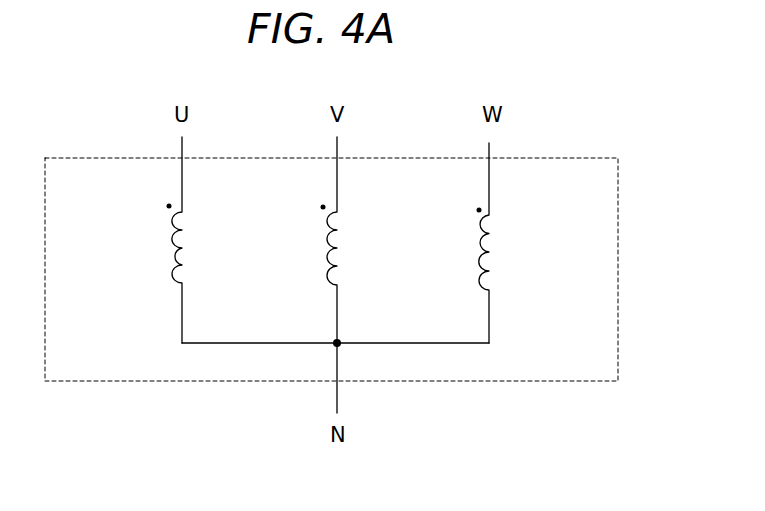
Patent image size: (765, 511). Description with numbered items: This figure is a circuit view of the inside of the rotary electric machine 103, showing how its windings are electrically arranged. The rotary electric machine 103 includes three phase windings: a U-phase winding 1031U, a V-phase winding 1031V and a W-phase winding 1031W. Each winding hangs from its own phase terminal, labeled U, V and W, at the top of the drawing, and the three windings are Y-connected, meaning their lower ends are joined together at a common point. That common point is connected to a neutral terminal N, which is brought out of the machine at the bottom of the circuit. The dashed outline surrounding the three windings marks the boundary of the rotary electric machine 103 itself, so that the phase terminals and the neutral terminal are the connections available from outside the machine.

The rotary electric machine 103 is at (83, 157).
The U-phase winding 1031U is at (183, 233).
The V-phase winding 1031V is at (338, 235).
The W-phase winding 1031W is at (490, 237).